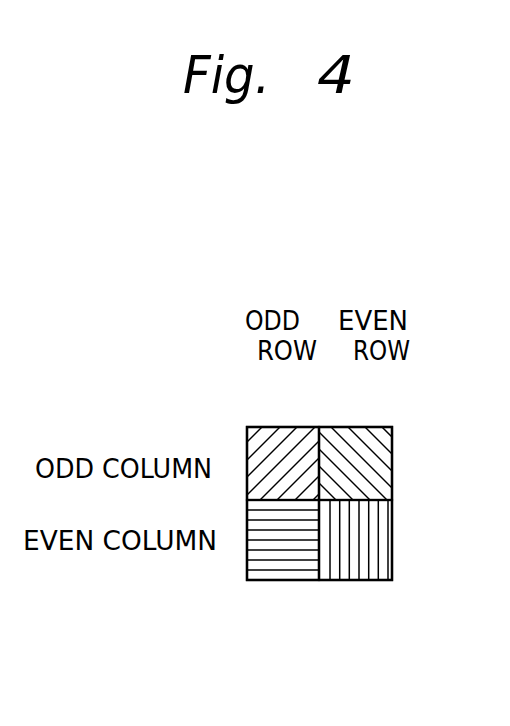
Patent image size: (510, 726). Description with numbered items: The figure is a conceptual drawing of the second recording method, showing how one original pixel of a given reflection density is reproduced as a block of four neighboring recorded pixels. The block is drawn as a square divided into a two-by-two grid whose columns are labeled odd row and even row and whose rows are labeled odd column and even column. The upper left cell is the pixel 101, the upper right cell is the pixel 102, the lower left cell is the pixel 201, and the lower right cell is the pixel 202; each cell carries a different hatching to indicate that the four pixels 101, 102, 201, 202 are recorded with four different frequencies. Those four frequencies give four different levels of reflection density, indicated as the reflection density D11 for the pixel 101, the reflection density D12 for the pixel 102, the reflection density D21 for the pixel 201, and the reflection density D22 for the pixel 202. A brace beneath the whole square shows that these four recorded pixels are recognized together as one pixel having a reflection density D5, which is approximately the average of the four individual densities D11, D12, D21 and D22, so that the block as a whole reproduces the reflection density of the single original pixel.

The pixel 101 is at (248, 481).
The pixel 102 is at (392, 468).
The pixel 201 is at (248, 552).
The pixel 202 is at (394, 540).
The reflection density D11 is at (258, 428).
The reflection density D12 is at (380, 428).
The reflection density D21 is at (275, 582).
The reflection density D22 is at (385, 568).
The reflection density D5 is at (322, 536).